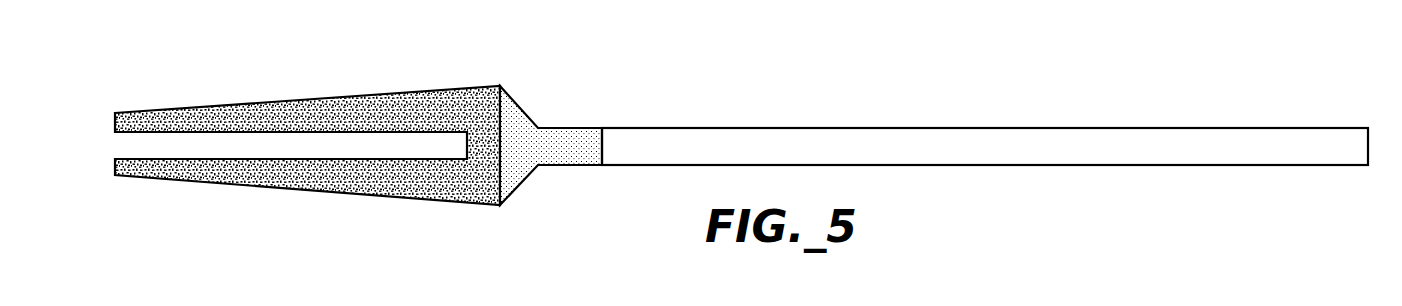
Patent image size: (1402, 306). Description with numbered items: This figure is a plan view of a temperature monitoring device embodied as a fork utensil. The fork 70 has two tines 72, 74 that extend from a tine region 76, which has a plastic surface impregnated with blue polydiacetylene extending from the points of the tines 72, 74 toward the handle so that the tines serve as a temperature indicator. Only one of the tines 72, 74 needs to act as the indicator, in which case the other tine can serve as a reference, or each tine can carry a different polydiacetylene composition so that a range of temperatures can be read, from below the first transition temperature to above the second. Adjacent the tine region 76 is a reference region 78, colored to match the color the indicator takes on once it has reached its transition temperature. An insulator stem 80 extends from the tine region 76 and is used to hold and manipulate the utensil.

The fork 70 is at (750, 53).
The tine 72 is at (135, 113).
The tine 74 is at (135, 175).
The tine region 76 is at (445, 86).
The reference region 78 is at (525, 112).
The insulator stem 80 is at (1295, 128).